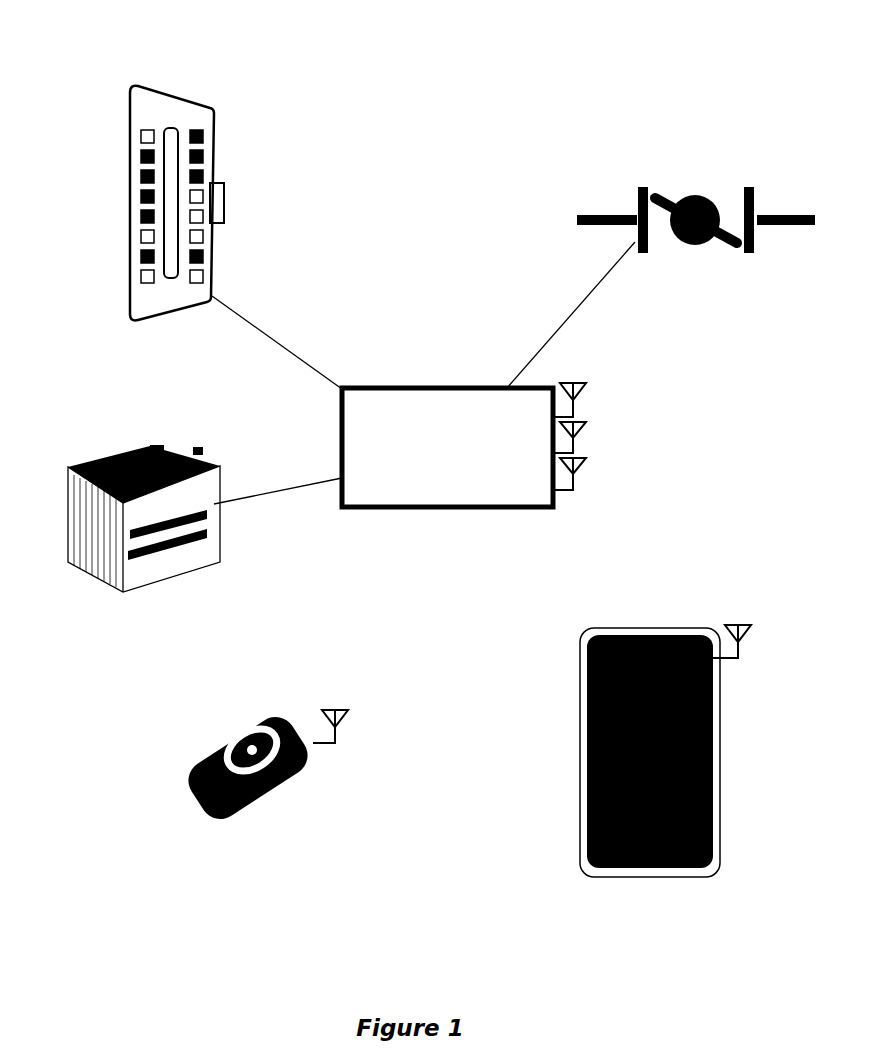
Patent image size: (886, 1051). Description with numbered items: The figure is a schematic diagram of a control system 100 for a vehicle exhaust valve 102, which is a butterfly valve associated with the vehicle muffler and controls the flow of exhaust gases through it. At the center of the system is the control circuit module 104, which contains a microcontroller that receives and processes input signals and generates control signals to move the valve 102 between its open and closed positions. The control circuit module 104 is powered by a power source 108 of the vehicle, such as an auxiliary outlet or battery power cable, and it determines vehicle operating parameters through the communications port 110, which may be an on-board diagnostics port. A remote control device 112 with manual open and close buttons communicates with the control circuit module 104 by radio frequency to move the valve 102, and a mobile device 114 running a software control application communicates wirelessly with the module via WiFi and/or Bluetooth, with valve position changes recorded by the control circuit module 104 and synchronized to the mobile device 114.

The control system 100 is at (80, 40).
The vehicle exhaust valve 102 is at (752, 187).
The control circuit module 104 is at (395, 388).
The power source 108 is at (86, 460).
The communications port 110 is at (132, 177).
The remote control device 112 is at (190, 765).
The mobile device 114 is at (583, 722).